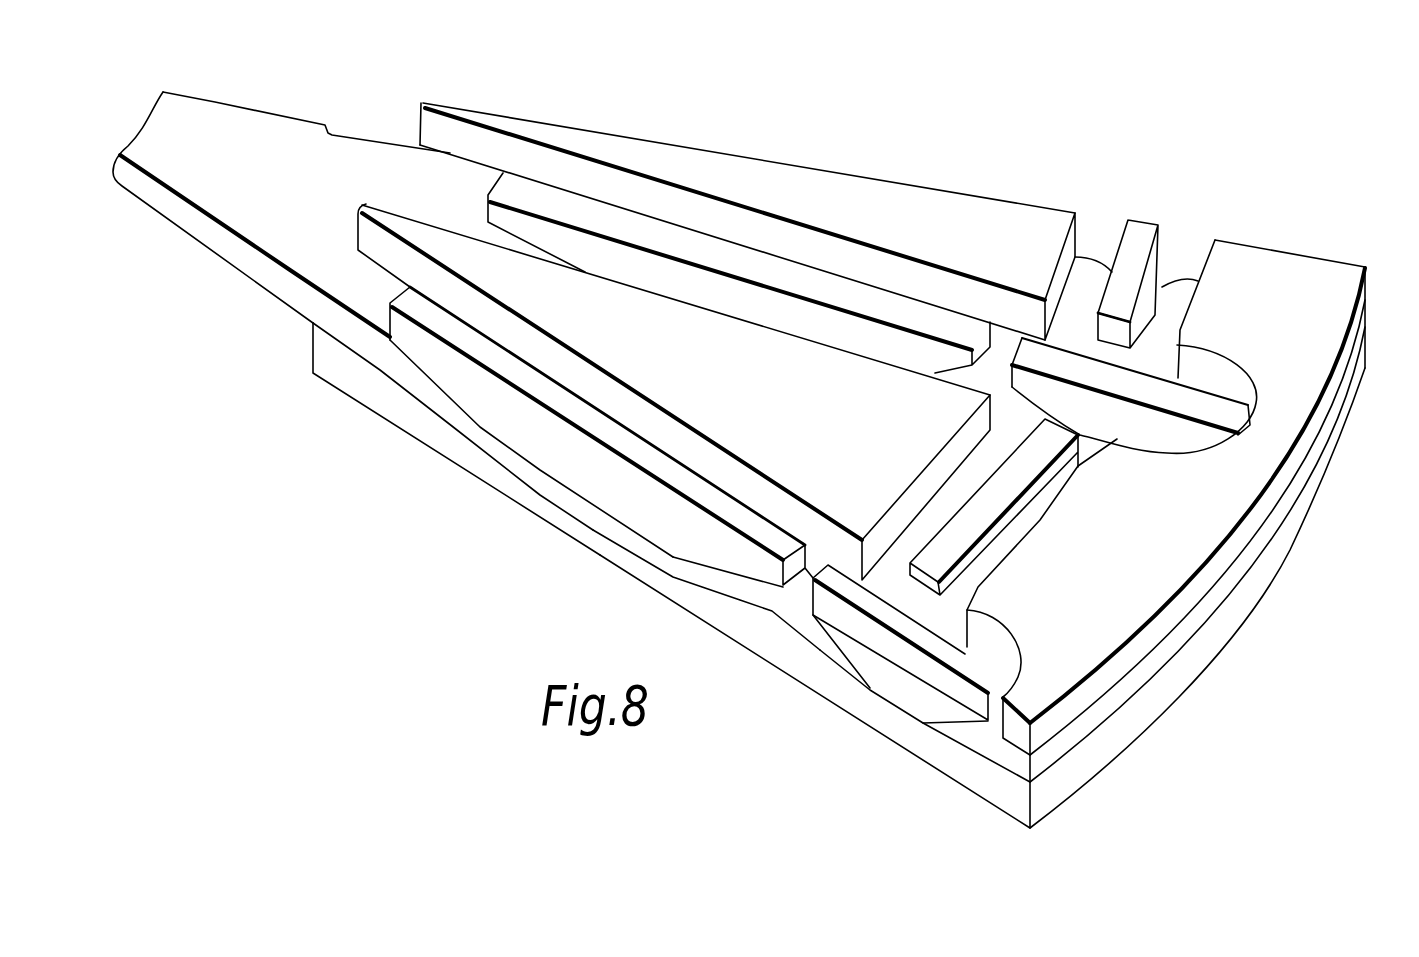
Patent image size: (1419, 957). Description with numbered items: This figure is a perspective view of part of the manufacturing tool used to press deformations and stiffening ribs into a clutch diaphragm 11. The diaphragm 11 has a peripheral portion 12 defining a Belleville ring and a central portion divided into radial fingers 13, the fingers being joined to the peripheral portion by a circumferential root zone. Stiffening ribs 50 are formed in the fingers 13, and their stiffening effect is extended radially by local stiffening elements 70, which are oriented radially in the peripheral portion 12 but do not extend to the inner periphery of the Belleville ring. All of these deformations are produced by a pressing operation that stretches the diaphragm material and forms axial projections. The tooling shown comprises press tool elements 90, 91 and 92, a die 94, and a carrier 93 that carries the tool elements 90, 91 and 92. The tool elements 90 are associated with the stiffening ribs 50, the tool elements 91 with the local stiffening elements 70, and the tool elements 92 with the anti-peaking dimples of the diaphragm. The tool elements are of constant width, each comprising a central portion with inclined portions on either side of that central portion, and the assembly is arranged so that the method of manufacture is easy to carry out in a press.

The diaphragm 11 is at (552, 492).
The peripheral portion 12 is at (983, 737).
The radial fingers 13 is at (238, 222).
The stiffening ribs 50 is at (660, 562).
The local stiffening elements 70 is at (923, 723).
The tool elements 90 is at (647, 498).
The tool elements 91 is at (910, 668).
The tool elements 92 is at (1140, 237).
The carrier 93 is at (1142, 632).
The die 94 is at (420, 440).